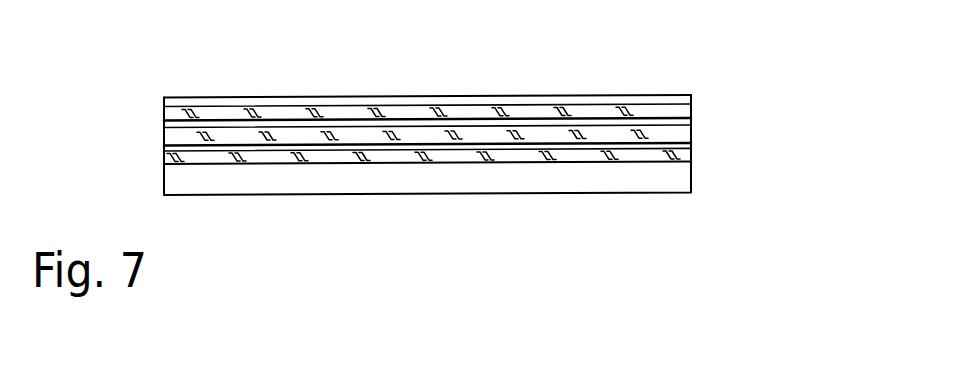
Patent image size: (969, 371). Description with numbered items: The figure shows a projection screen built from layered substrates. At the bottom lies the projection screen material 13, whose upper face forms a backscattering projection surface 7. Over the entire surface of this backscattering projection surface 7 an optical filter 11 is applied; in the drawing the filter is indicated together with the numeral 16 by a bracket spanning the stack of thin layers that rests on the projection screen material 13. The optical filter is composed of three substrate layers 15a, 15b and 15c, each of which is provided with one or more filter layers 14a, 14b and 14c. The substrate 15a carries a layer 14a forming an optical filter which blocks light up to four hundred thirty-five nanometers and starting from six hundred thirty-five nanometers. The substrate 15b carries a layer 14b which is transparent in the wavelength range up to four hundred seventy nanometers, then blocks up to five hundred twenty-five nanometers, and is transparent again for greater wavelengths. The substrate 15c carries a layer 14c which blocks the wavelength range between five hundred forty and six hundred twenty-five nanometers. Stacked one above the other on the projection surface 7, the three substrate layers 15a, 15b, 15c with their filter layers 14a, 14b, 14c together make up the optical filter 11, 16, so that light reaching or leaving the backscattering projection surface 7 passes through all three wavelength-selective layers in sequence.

The optical filter 11 is at (369, 103).
The layer stack 16 is at (157, 165).
The backscattering projection surface 7 is at (318, 165).
The projection screen material 13 is at (453, 178).
The filter layer 14a is at (691, 96).
The filter layer 14b is at (691, 120).
The filter layer 14c is at (691, 143).
The substrate layer 15a is at (691, 109).
The substrate layer 15b is at (691, 133).
The substrate layer 15c is at (691, 153).